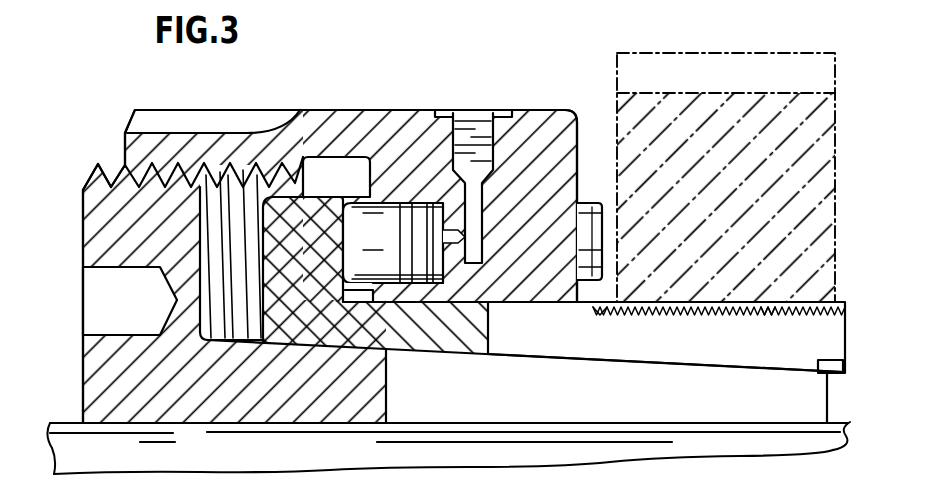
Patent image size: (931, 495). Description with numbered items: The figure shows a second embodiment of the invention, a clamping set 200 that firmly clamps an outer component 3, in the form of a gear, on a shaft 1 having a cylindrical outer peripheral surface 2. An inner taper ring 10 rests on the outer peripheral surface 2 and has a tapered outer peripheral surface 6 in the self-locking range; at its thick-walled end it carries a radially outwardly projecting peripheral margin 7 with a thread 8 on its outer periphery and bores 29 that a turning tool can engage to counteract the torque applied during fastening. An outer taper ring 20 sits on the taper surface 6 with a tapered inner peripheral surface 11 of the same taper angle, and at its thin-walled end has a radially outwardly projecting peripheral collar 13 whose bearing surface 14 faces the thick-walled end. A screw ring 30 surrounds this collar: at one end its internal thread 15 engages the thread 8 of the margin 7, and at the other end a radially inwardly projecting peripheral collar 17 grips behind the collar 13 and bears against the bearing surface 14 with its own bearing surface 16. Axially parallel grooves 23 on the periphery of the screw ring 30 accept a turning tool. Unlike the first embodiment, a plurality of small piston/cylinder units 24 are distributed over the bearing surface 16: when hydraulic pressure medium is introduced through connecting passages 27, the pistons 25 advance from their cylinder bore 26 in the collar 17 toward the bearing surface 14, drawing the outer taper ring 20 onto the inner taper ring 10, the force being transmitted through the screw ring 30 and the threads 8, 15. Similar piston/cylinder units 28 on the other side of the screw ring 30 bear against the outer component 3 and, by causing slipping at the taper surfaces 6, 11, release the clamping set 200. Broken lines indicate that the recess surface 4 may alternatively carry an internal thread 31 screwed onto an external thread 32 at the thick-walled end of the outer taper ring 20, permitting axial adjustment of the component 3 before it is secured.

The clamping set 200 is at (80, 110).
The screw ring 30 is at (126, 110).
The axially parallel grooves 23 is at (229, 120).
The internal thread 15 is at (246, 182).
The peripheral collar 13 is at (313, 203).
The bearing surface 14 is at (357, 222).
The bearing surface 16 is at (392, 192).
The piston/cylinder units 24 is at (413, 178).
The connecting passages 27 is at (487, 128).
The piston/cylinder units 28 is at (585, 194).
The outer component 3 is at (838, 136).
The thread 8 is at (90, 172).
The peripheral margin 7 is at (98, 222).
The bores 29 is at (95, 333).
The pistons 25 is at (391, 306).
The cylinder bore 26 is at (440, 304).
The peripheral collar 17 is at (515, 268).
The tapered inner peripheral surface 11 is at (553, 365).
The tapered outer peripheral surface 6 is at (637, 357).
The cylindrical inner peripheral surface 4 is at (724, 320).
The external thread 32 is at (605, 309).
The internal thread 31 is at (770, 314).
The outer taper ring 20 is at (845, 333).
The inner taper ring 10 is at (835, 403).
The cylindrical outer peripheral surface 2 is at (850, 430).
The shaft 1 is at (833, 455).